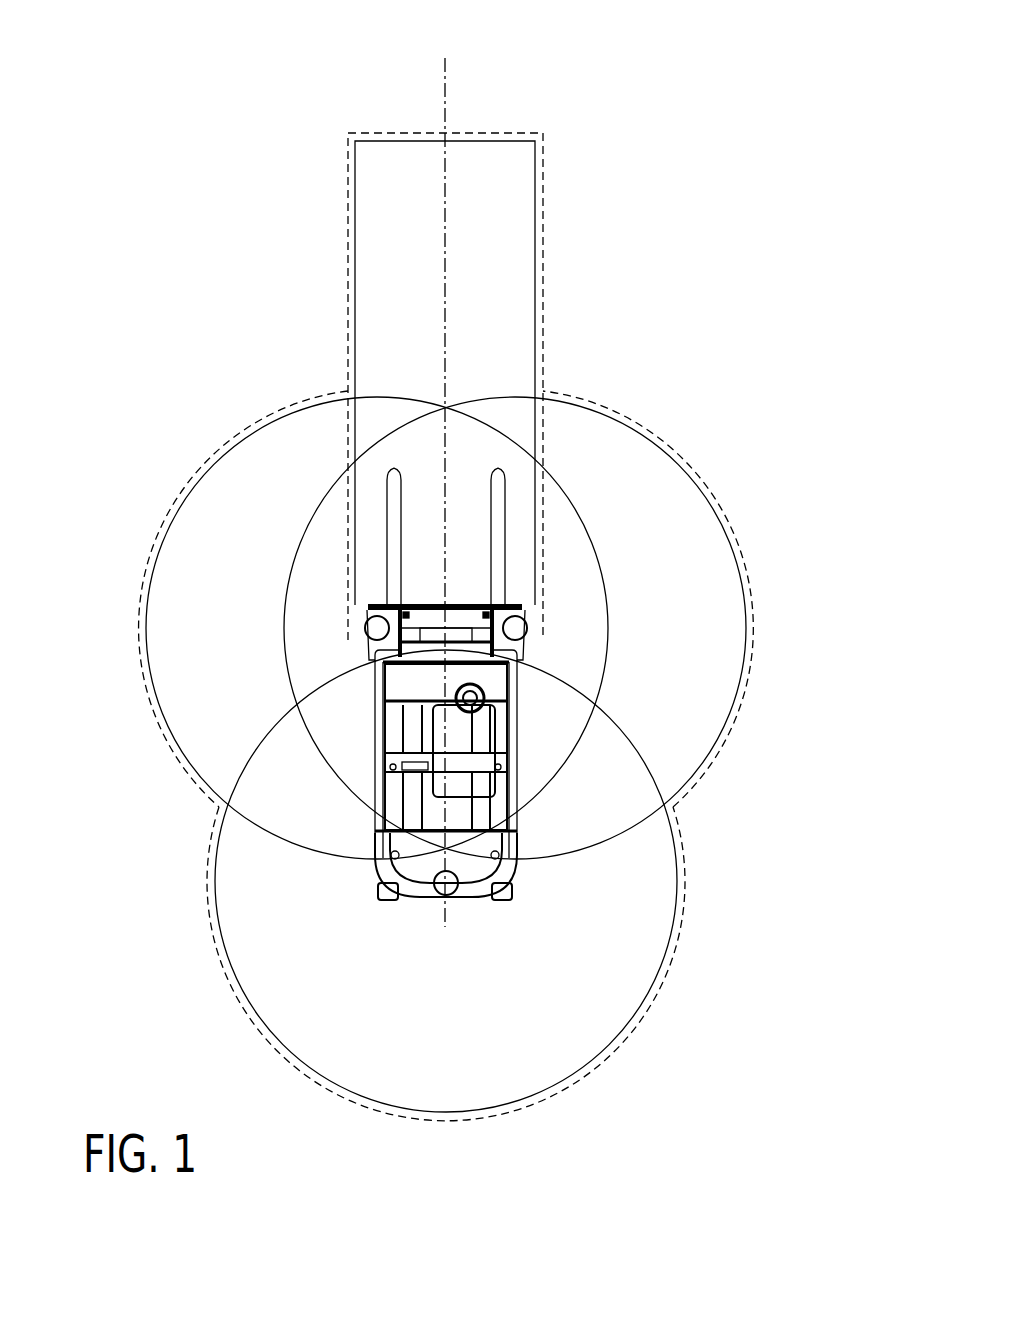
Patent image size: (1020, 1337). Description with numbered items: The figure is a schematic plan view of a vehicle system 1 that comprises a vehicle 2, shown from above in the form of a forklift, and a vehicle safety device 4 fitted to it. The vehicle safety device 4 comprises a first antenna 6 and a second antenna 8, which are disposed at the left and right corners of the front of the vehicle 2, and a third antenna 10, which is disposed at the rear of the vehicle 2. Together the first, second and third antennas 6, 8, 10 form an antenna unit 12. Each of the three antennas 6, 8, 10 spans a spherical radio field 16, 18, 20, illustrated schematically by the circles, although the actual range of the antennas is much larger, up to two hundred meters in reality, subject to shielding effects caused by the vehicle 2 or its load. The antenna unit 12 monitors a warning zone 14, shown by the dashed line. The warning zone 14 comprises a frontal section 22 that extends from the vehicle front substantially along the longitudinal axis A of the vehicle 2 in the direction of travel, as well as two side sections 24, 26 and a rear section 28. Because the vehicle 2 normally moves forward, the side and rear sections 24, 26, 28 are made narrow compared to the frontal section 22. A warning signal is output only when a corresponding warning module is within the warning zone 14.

The vehicle system 1 is at (168, 140).
The longitudinal axis A is at (450, 72).
The vehicle 2 is at (468, 902).
The vehicle safety device 4 is at (702, 383).
The first antenna 6 is at (365, 629).
The second antenna 8 is at (528, 627).
The third antenna 10 is at (438, 900).
The antenna unit 12 is at (777, 506).
The warning zone 14 is at (510, 135).
The spherical radio field 16 is at (157, 720).
The spherical radio field 18 is at (752, 668).
The spherical radio field 20 is at (574, 1094).
The frontal section 22 is at (383, 242).
The side section 24 is at (197, 792).
The side section 26 is at (697, 706).
The rear section 28 is at (518, 1100).